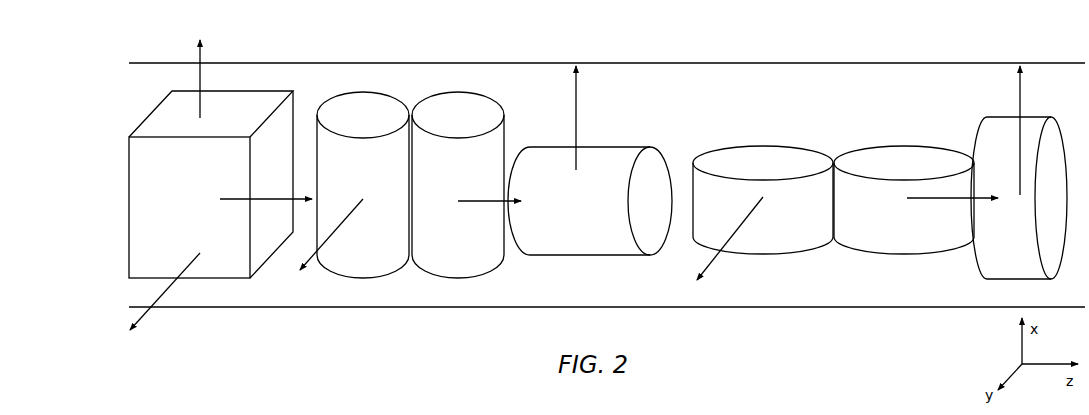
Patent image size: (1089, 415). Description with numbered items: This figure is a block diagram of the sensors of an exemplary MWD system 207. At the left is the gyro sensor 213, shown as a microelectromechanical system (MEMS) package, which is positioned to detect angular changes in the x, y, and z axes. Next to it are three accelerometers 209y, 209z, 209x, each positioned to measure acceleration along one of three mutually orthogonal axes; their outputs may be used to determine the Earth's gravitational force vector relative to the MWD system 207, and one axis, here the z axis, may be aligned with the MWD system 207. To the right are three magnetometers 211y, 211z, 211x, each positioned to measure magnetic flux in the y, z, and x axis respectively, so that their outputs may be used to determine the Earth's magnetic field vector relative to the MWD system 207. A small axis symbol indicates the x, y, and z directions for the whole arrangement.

The MWD system 207 is at (346, 308).
The gyro sensor 213 is at (233, 100).
The accelerometer 209y is at (345, 110).
The accelerometer 209z is at (447, 110).
The accelerometer 209x is at (592, 150).
The magnetometer 211y is at (757, 155).
The magnetometer 211z is at (865, 155).
The magnetometer 211x is at (1004, 125).